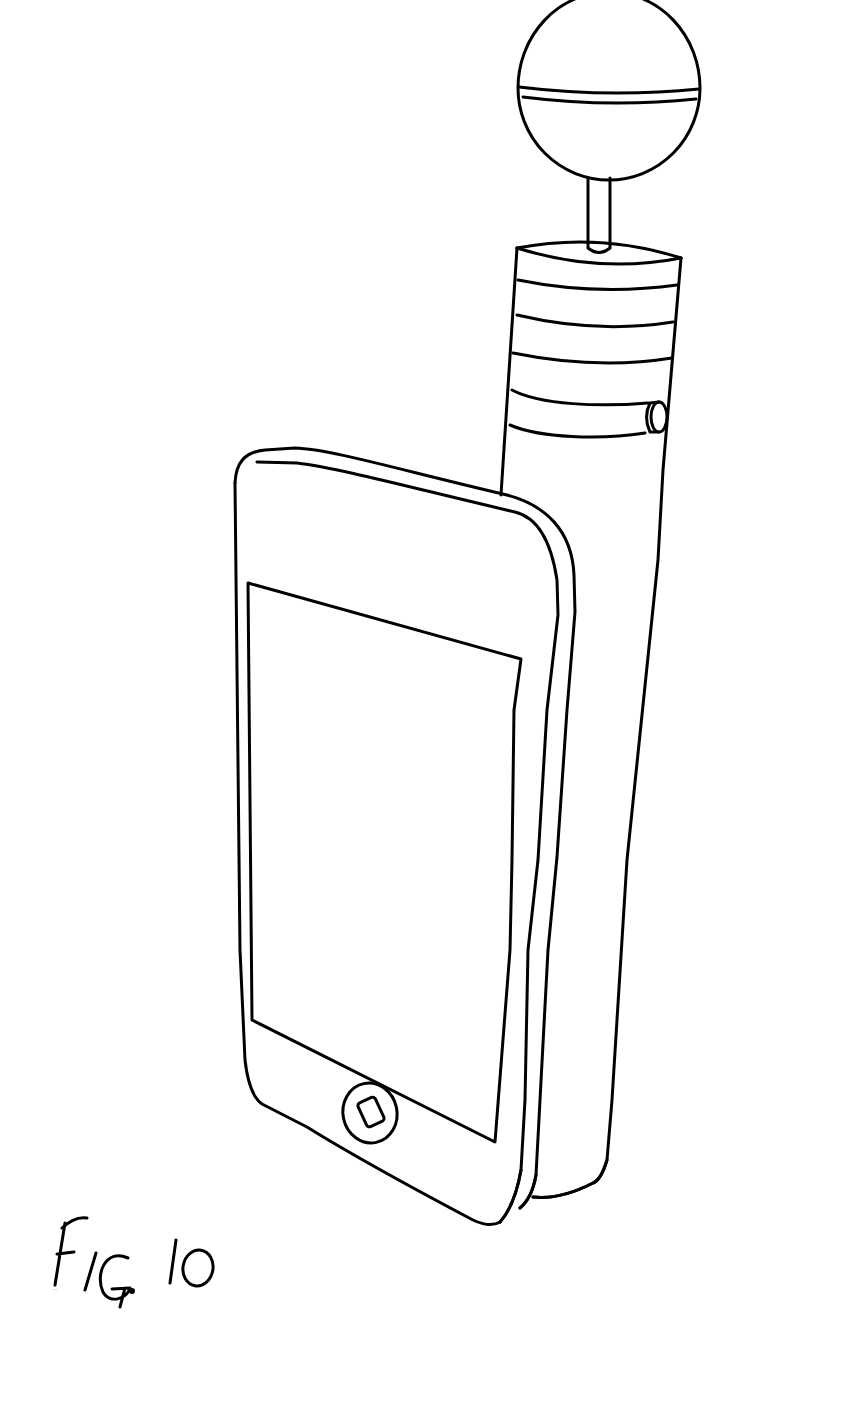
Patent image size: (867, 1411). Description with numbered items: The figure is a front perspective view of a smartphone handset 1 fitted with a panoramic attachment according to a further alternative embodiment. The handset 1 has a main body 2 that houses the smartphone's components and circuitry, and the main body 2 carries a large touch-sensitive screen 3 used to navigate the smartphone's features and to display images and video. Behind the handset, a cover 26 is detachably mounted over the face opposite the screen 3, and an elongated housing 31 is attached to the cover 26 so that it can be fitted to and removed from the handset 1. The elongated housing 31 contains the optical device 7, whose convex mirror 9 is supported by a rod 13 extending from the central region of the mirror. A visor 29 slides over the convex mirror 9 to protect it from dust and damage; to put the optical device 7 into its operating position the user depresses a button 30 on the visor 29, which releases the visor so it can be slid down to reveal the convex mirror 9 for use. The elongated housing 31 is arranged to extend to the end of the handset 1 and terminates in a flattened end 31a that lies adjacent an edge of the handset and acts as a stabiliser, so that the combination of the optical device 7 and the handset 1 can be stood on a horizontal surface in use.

The handset 1 is at (229, 522).
The main body 2 is at (270, 1103).
The touch-sensitive screen 3 is at (263, 873).
The optical device 7 is at (597, 611).
The convex mirror 9 is at (677, 137).
The rod 13 is at (607, 208).
The cover 26 is at (532, 1200).
The visor 29 is at (662, 340).
The button 30 is at (670, 417).
The elongated housing 31 is at (653, 590).
The flattened end 31a is at (593, 1183).